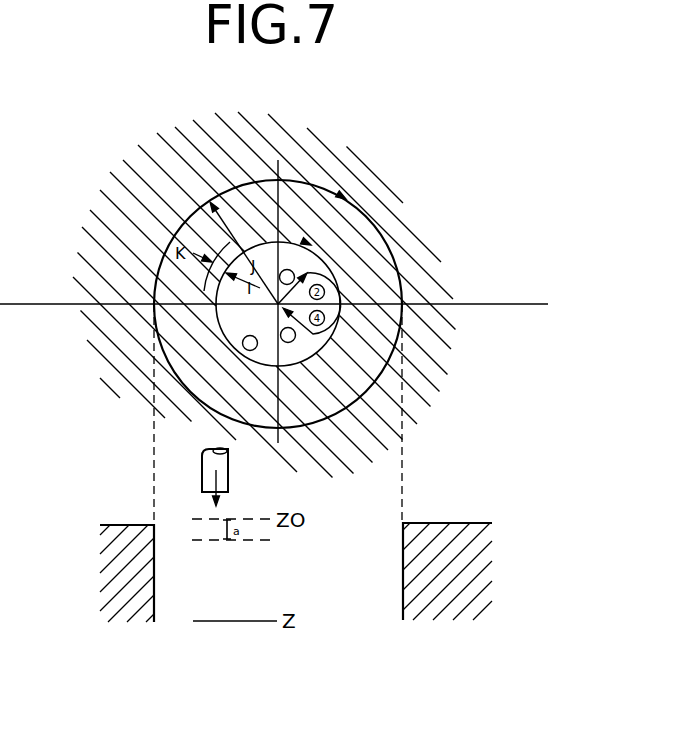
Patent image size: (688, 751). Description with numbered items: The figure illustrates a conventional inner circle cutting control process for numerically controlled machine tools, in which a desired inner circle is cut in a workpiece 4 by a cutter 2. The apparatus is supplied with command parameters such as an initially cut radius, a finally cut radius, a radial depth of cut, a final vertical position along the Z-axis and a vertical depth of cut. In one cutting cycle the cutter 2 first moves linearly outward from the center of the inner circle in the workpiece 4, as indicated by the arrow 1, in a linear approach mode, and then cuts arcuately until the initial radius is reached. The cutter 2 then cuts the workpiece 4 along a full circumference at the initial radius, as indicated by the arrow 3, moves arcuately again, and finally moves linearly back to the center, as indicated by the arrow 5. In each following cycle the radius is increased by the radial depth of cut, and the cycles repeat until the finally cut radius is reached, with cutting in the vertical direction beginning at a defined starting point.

The linear approach arrow 1 is at (287, 277).
The cutter 2 is at (223, 470).
The full circumference cutting arrow 3 is at (250, 343).
The workpiece 4 is at (132, 608).
The linear return arrow 5 is at (288, 335).